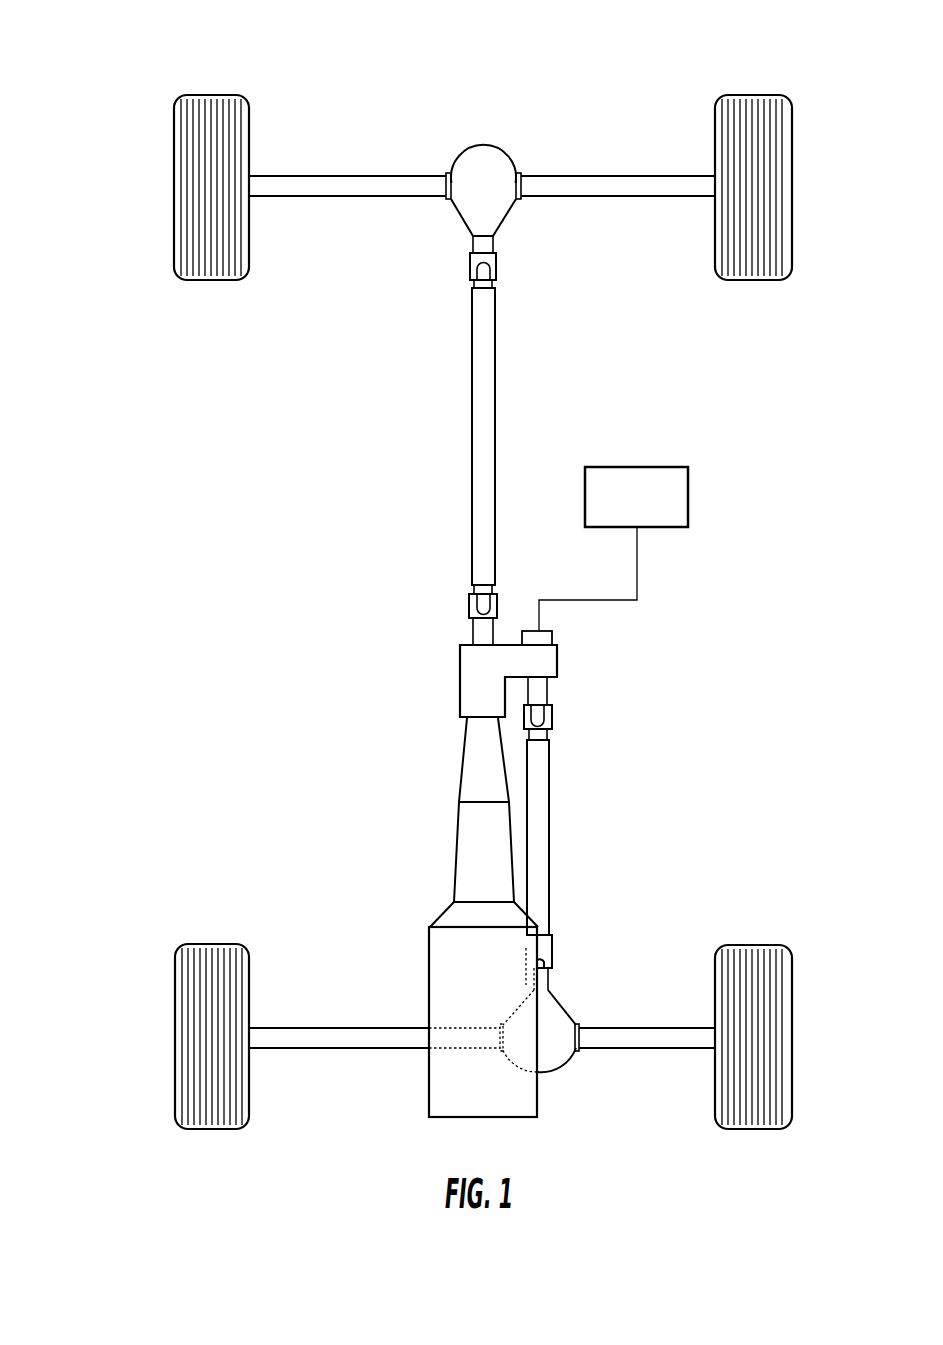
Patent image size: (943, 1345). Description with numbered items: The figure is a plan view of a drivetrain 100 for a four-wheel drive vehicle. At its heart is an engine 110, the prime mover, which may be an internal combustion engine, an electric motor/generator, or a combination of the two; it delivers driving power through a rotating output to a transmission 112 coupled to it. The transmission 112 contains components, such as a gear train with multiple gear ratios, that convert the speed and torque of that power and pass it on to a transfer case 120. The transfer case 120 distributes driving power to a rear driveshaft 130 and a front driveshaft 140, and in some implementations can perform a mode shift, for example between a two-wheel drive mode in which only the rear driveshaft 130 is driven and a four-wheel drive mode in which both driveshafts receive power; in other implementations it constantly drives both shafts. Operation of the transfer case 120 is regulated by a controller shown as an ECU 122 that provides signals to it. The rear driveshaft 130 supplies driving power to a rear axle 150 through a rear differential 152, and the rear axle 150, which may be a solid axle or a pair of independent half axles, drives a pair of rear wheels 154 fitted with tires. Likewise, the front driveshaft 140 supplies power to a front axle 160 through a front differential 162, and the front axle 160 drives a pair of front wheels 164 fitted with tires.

The drivetrain 100 is at (116, 111).
The engine 110 is at (440, 977).
The transmission 112 is at (460, 849).
The transfer case 120 is at (470, 680).
The ECU 122 is at (689, 497).
The rear driveshaft 130 is at (483, 437).
The front driveshaft 140 is at (545, 822).
The rear axle 150 is at (631, 182).
The rear differential 152 is at (486, 163).
The rear wheels 154 is at (250, 127).
The front axle 160 is at (657, 1037).
The front differential 162 is at (555, 1013).
The front wheels 164 is at (221, 945).